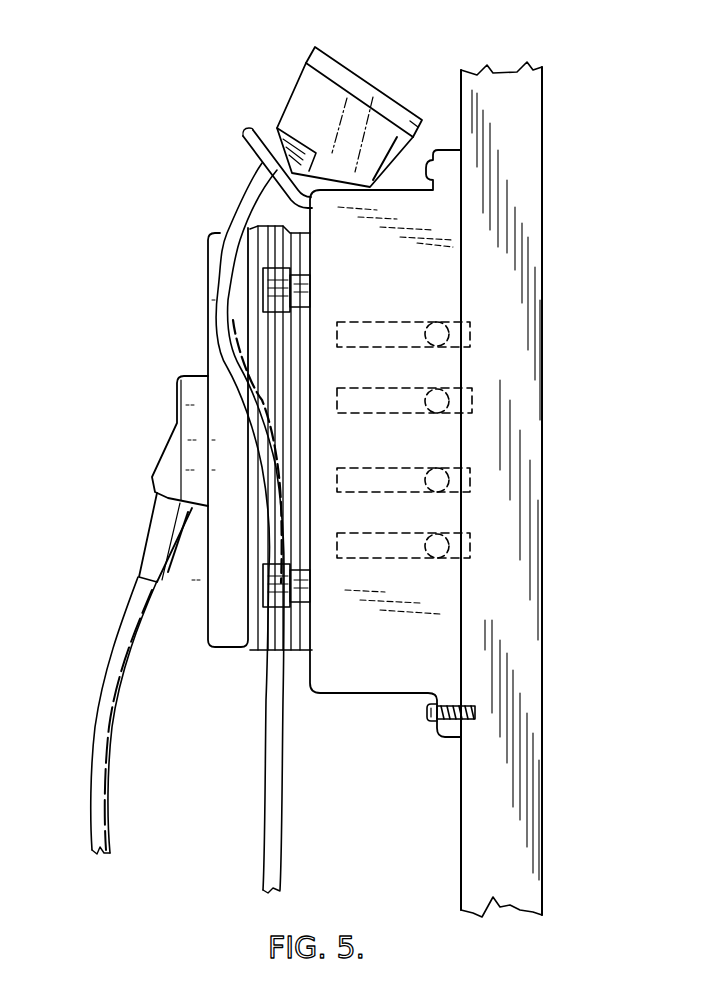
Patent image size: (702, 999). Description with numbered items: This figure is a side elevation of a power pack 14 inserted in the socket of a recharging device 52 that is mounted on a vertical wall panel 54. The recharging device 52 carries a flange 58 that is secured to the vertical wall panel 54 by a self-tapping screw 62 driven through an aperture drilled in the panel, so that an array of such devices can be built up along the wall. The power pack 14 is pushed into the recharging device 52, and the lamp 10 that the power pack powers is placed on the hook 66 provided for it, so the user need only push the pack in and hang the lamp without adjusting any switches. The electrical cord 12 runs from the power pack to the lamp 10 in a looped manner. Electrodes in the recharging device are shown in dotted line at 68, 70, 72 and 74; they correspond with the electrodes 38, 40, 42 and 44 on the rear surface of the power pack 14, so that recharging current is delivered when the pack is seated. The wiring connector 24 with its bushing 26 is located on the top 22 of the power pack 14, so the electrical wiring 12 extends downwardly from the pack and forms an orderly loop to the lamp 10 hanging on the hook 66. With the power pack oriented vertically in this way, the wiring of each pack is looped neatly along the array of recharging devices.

The lamp 10 is at (283, 72).
The electrical cord 12 is at (97, 723).
The power pack 14 is at (172, 330).
The top of the power pack 22 is at (203, 637).
The wiring connector 24 is at (177, 448).
The bushing 26 is at (162, 545).
The electrode 38 is at (437, 322).
The electrode 40 is at (437, 400).
The electrode 42 is at (438, 477).
The electrode 44 is at (440, 542).
The recharging device 52 is at (366, 735).
The vertical wall panel 54 is at (527, 223).
The flange 58 is at (448, 728).
The self-tapping screw 62 is at (430, 721).
The hook 66 is at (230, 150).
The electrode 68 is at (378, 322).
The electrode 70 is at (374, 400).
The electrode 72 is at (370, 478).
The electrode 74 is at (364, 545).